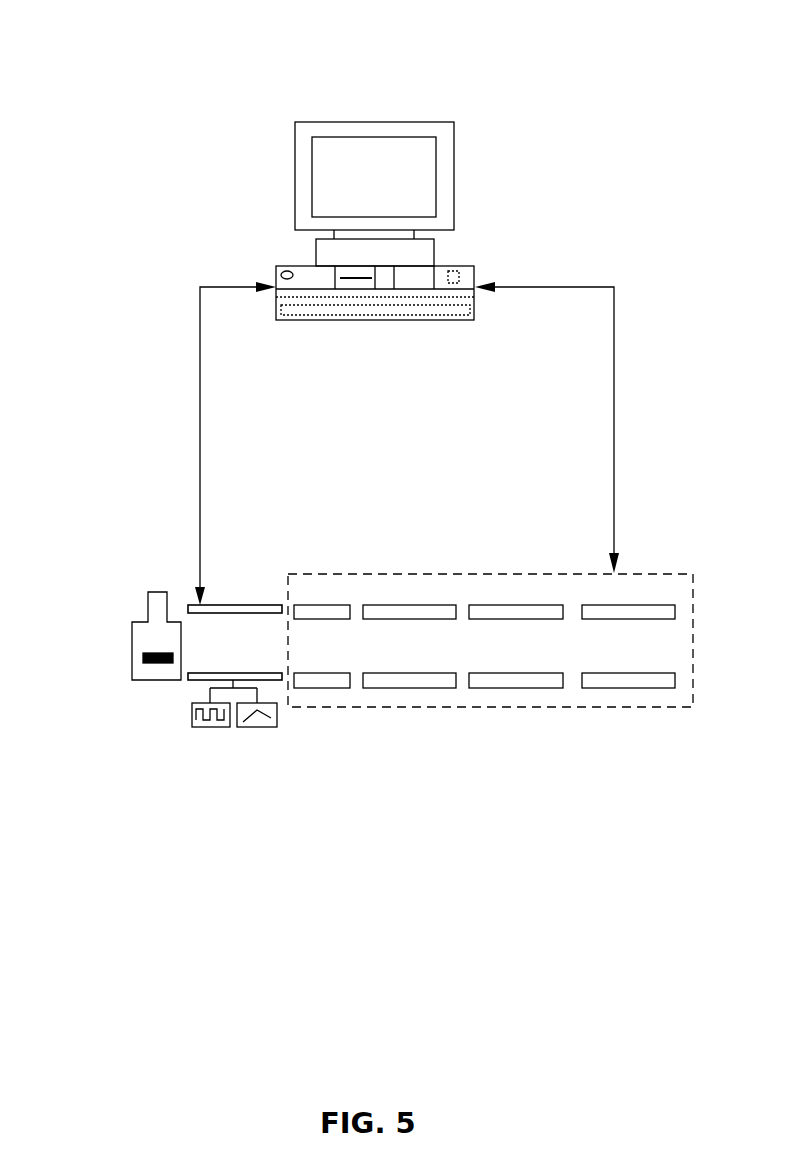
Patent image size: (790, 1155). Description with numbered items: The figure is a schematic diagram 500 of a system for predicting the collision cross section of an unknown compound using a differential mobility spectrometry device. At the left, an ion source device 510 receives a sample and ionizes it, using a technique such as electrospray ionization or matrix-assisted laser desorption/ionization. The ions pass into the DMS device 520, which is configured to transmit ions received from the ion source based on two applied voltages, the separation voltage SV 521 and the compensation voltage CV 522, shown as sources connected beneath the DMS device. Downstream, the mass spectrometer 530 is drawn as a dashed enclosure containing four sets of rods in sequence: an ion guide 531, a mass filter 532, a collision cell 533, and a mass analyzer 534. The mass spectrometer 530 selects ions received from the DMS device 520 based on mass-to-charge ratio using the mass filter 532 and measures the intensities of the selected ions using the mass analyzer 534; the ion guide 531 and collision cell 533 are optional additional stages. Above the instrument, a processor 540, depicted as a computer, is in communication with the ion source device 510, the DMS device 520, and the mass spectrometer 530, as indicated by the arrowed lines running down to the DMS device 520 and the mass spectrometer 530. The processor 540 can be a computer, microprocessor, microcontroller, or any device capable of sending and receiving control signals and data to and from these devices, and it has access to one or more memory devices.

The schematic diagram 500 is at (240, 994).
The ion source device 510 is at (165, 592).
The DMS device 520 is at (277, 605).
The SV 521 is at (198, 727).
The CV 522 is at (242, 727).
The mass spectrometer 530 is at (462, 573).
The ion guide 531 is at (317, 688).
The mass filter 532 is at (397, 688).
The collision cell 533 is at (518, 688).
The mass analyzer 534 is at (637, 688).
The processor 540 is at (373, 122).